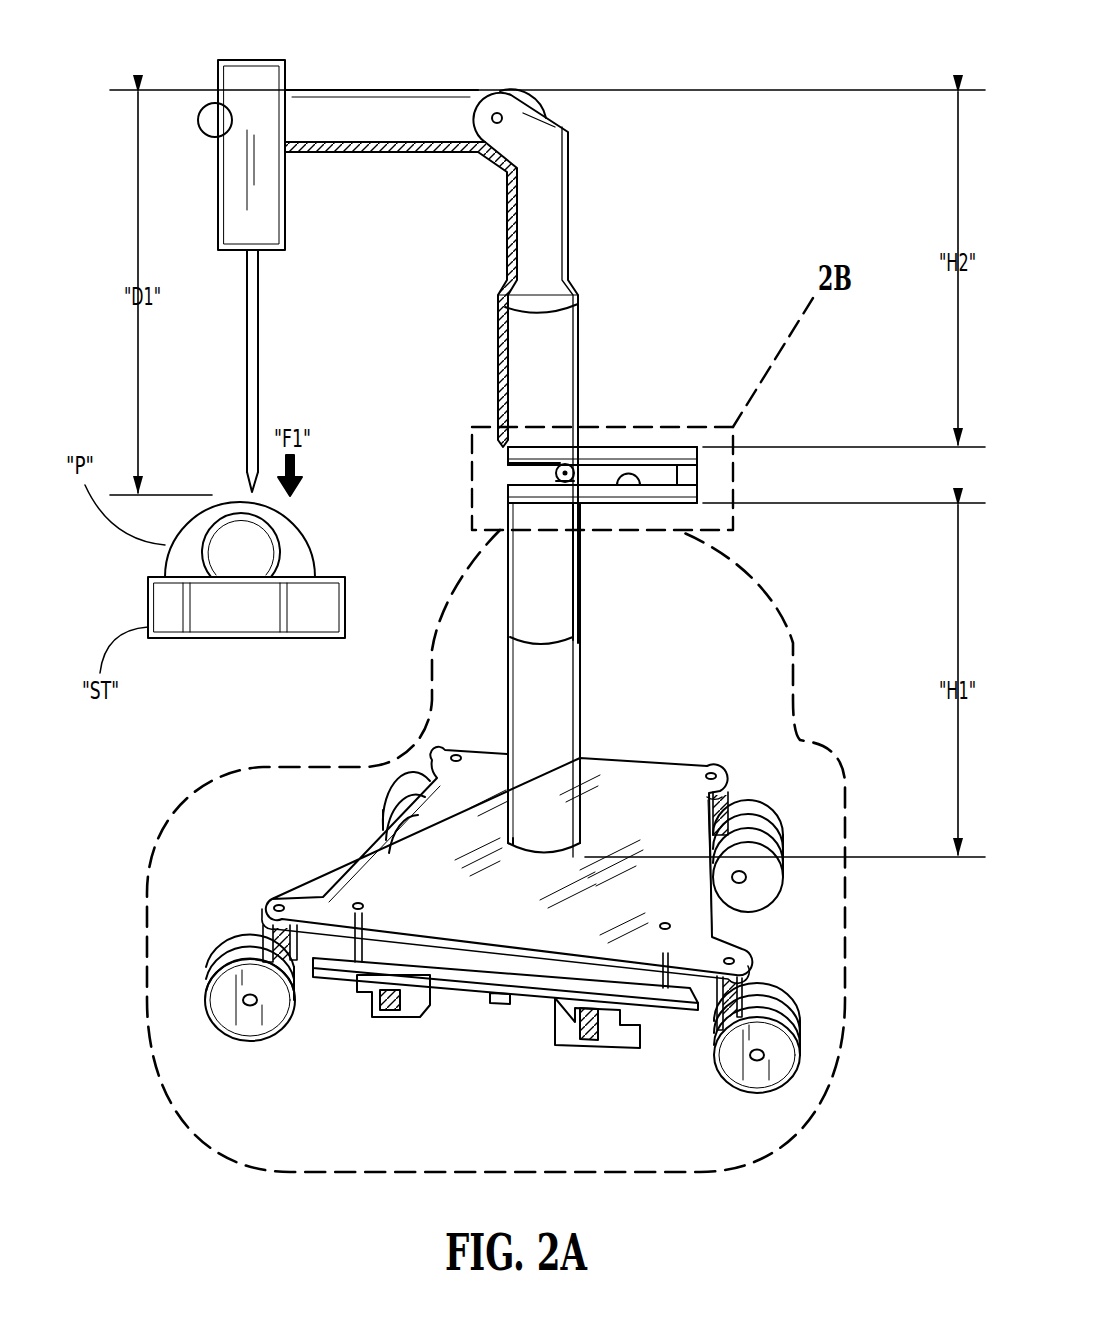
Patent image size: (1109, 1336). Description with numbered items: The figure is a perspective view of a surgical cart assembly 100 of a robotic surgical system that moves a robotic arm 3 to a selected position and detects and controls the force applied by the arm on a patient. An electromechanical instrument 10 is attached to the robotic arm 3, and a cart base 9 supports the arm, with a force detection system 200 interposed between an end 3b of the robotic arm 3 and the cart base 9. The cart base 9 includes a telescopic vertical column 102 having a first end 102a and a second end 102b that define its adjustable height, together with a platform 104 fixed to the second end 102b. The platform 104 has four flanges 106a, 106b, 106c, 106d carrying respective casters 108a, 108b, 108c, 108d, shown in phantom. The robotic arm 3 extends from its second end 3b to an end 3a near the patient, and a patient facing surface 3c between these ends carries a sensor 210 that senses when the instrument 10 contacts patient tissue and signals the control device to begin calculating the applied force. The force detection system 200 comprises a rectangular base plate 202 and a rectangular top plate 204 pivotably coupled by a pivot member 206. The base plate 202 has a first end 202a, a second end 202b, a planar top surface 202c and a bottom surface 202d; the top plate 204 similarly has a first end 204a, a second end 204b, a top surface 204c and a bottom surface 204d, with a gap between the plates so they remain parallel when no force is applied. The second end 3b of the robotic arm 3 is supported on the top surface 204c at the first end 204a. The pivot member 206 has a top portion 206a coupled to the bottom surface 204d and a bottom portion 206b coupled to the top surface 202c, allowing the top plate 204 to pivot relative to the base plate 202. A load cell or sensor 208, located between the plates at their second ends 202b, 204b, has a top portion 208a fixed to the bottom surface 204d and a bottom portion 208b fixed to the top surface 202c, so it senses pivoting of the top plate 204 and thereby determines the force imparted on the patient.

The robotic arm 3 is at (587, 160).
The end of robotic arm 3a is at (212, 108).
The second end of robotic arm 3b is at (583, 447).
The patient facing surface 3c is at (401, 177).
The cart base 9 is at (795, 670).
The electromechanical instrument 10 is at (281, 297).
The surgical cart assembly 100 is at (714, 62).
The vertical column 102 is at (665, 607).
The first end of vertical column 102a is at (583, 540).
The second end of vertical column 102b is at (565, 833).
The platform 104 is at (795, 893).
The flange 106a is at (752, 957).
The flange 106b is at (710, 765).
The flange 106c is at (280, 898).
The flange 106d is at (447, 748).
The caster 108a is at (790, 1050).
The caster 108b is at (780, 838).
The caster 108c is at (215, 982).
The caster 108d is at (385, 805).
The force detection system 200 is at (748, 478).
The base plate 202 is at (657, 497).
The first end of base plate 202a is at (510, 493).
The second end of base plate 202b is at (683, 498).
The top surface of base plate 202c is at (645, 485).
The bottom surface of base plate 202d is at (562, 487).
The top plate 204 is at (637, 462).
The first end of top plate 204a is at (507, 457).
The second end of top plate 204b is at (702, 462).
The top surface of top plate 204c is at (525, 453).
The bottom surface of top plate 204d is at (507, 455).
The pivot member 206 is at (555, 473).
The top portion of pivot member 206a is at (556, 465).
The bottom portion of pivot member 206b is at (560, 482).
The sensor 208 is at (690, 468).
The top portion of sensor 208a is at (633, 477).
The bottom portion of sensor 208b is at (697, 490).
The sensor 210 is at (382, 142).